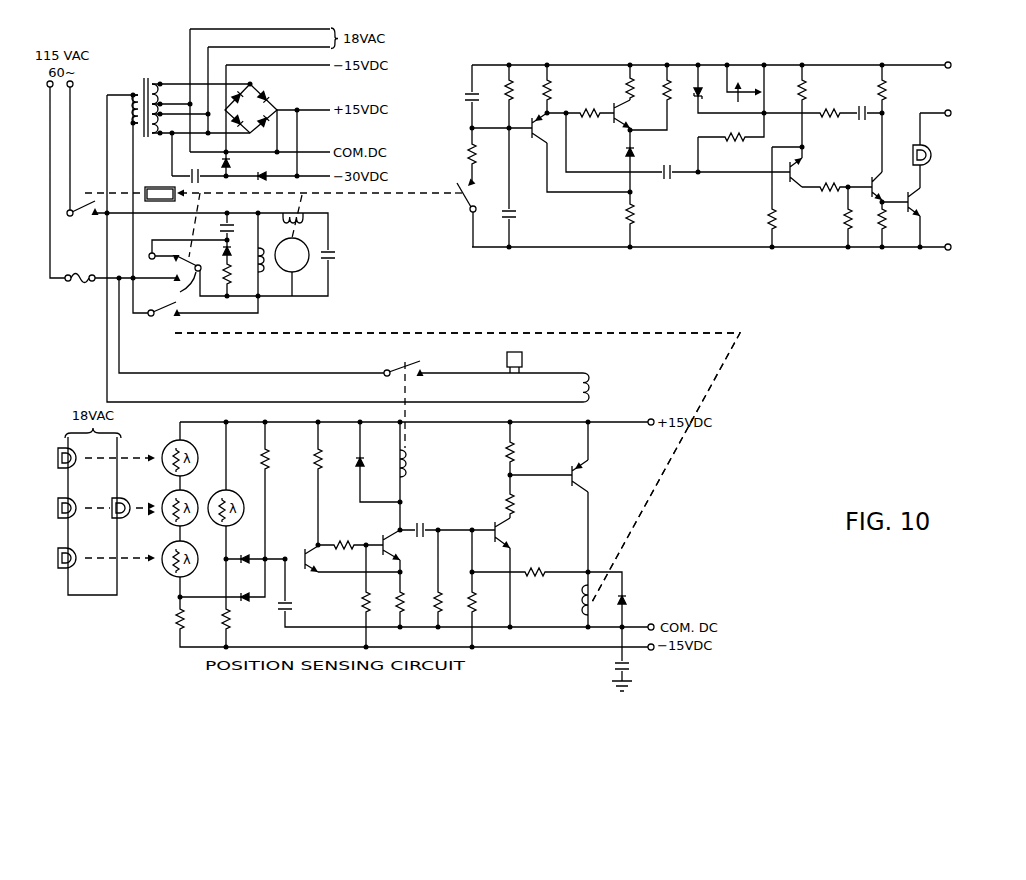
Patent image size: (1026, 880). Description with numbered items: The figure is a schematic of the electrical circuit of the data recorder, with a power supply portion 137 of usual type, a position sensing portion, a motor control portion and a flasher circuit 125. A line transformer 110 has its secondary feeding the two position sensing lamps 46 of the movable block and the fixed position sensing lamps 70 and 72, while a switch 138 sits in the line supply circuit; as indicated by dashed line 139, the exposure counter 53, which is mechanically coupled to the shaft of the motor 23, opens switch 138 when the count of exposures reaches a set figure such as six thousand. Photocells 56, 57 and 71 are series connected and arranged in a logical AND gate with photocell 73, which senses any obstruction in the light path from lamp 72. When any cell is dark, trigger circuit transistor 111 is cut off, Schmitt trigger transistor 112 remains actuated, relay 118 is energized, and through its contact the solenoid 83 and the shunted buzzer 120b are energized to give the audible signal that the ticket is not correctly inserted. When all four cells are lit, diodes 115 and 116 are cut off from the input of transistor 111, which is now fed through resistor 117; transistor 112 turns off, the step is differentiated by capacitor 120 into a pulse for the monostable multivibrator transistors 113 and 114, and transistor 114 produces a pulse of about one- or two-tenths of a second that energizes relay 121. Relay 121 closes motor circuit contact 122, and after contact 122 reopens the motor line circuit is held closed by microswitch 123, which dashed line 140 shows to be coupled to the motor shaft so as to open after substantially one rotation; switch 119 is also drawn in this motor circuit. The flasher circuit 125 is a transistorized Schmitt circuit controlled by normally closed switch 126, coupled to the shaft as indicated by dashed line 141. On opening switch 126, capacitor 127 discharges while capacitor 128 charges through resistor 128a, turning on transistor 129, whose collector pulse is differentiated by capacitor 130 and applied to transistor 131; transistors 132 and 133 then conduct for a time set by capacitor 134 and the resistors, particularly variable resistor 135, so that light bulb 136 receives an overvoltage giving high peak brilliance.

The line transformer 110 is at (140, 84).
The power supply portion 137 is at (286, 97).
The dashed line 139 is at (82, 191).
The dashed line 141 is at (354, 194).
The exposure counter 53 is at (161, 184).
The switch 138 is at (80, 218).
The dashed line 140 is at (184, 234).
The microswitch 123 is at (172, 307).
The motor 23 is at (293, 271).
The motor circuit contact 122 is at (173, 333).
The switch 119 is at (391, 370).
The buzzer 120b is at (524, 349).
The solenoid 83 is at (592, 382).
The relay 118 is at (413, 456).
The capacitor 120 is at (424, 522).
The trigger circuit transistor 111 is at (312, 550).
The Schmitt trigger circuit transistor 112 is at (386, 534).
The monostable multivibrator transistor 113 is at (506, 523).
The monostable multivibrator transistor 114 is at (588, 482).
The relay 121 is at (585, 599).
The resistor 117 is at (271, 464).
The diode 115 is at (241, 556).
The diode 116 is at (245, 606).
The photocell 56 is at (169, 443).
The photocell 57 is at (168, 521).
The photocell 71 is at (170, 575).
The photocell 73 is at (234, 493).
The position sensing lamps 46 is at (62, 467).
The fixed position sensing lamp 70 is at (63, 566).
The fixed position sensing lamp 72 is at (127, 497).
The flasher circuit 125 is at (705, 236).
The capacitor 127 is at (463, 93).
The resistor 128a is at (514, 73).
The capacitor 128 is at (525, 218).
The transistor 129 is at (541, 148).
The capacitor 130 is at (669, 179).
The switch 126 is at (467, 207).
The variable resistor 135 is at (767, 79).
The capacitor 134 is at (860, 102).
The transistor 131 is at (816, 173).
The transistor 132 is at (879, 191).
The transistor 133 is at (931, 209).
The light bulb 136 is at (938, 154).